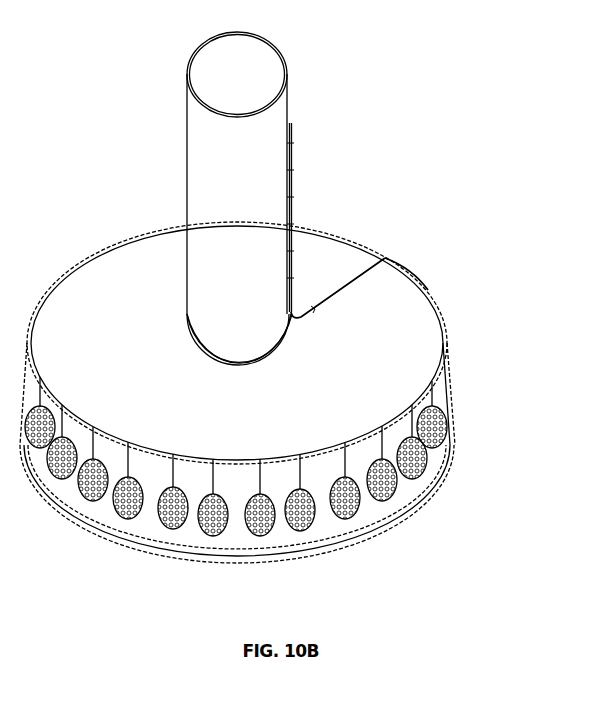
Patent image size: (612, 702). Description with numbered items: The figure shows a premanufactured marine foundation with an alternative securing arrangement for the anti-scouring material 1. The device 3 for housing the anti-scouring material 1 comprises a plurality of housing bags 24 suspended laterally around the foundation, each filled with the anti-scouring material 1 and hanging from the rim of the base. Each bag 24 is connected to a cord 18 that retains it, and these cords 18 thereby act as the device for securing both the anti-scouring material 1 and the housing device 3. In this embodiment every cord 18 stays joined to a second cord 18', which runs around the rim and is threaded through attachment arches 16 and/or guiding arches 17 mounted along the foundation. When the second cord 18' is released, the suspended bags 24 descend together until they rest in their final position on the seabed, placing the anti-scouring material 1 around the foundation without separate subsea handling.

The anti-scouring material 1 is at (300, 518).
The device for housing the anti-scouring material 3 is at (353, 513).
The attachment arches 16 is at (416, 287).
The guiding arches 17 is at (374, 260).
The cord 18 is at (483, 395).
The second cord 18' is at (284, 343).
The housing bags 24 is at (440, 443).